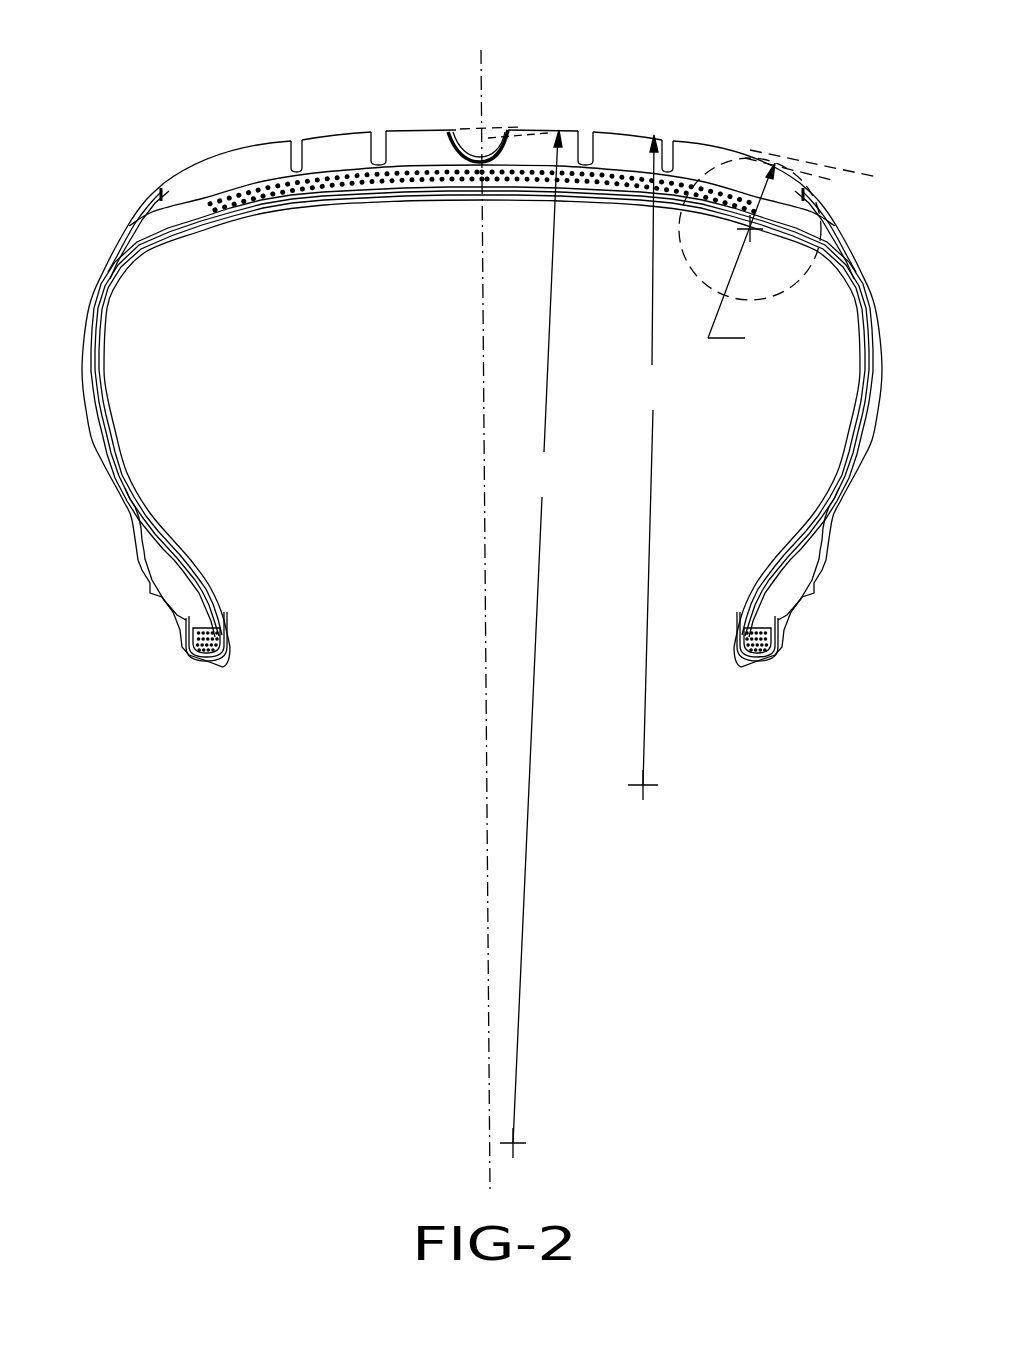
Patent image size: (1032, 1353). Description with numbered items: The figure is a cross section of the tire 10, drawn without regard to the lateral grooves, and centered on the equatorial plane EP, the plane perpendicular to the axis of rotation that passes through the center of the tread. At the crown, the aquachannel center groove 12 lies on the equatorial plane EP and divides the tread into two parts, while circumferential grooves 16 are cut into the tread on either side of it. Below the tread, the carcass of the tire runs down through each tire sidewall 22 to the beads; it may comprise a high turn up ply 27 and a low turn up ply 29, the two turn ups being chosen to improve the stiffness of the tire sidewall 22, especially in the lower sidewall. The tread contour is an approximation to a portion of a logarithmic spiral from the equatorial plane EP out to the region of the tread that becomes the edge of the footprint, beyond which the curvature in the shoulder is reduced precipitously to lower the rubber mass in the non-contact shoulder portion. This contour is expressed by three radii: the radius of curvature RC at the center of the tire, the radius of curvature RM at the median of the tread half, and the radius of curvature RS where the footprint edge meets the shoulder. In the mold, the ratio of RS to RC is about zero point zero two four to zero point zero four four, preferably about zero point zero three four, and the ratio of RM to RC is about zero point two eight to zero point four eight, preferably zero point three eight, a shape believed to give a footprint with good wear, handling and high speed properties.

The tire 10 is at (158, 662).
The aquachannel center groove 12 is at (478, 160).
The circumferential grooves 16 is at (290, 143).
The tire sidewall 22 is at (82, 367).
The high turn up ply 27 is at (128, 522).
The low turn up ply 29 is at (190, 606).
The equatorial plane EP is at (479, 605).
The radius of curvature of the tread at the center of the tire RC is at (531, 644).
The radius of curvature at the median of the tread half RM is at (644, 467).
The radius of curvature of the tread at the footprint edge meeting the shoulder RS is at (750, 260).